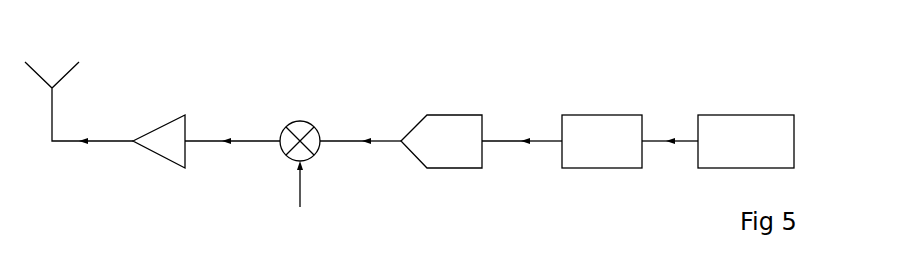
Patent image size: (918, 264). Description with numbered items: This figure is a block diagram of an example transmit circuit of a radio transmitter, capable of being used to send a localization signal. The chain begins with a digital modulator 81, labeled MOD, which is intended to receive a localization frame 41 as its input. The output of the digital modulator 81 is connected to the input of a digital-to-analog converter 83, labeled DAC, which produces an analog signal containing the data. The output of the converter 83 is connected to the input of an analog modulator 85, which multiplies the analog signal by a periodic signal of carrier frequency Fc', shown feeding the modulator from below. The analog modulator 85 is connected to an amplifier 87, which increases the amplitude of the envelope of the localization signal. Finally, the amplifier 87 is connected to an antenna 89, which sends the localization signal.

The localization frame 41 is at (755, 118).
The digital modulator 81 is at (613, 118).
The digital-to-analog converter 83 is at (460, 118).
The analog modulator 85 is at (302, 120).
The amplifier 87 is at (168, 128).
The antenna 89 is at (67, 73).